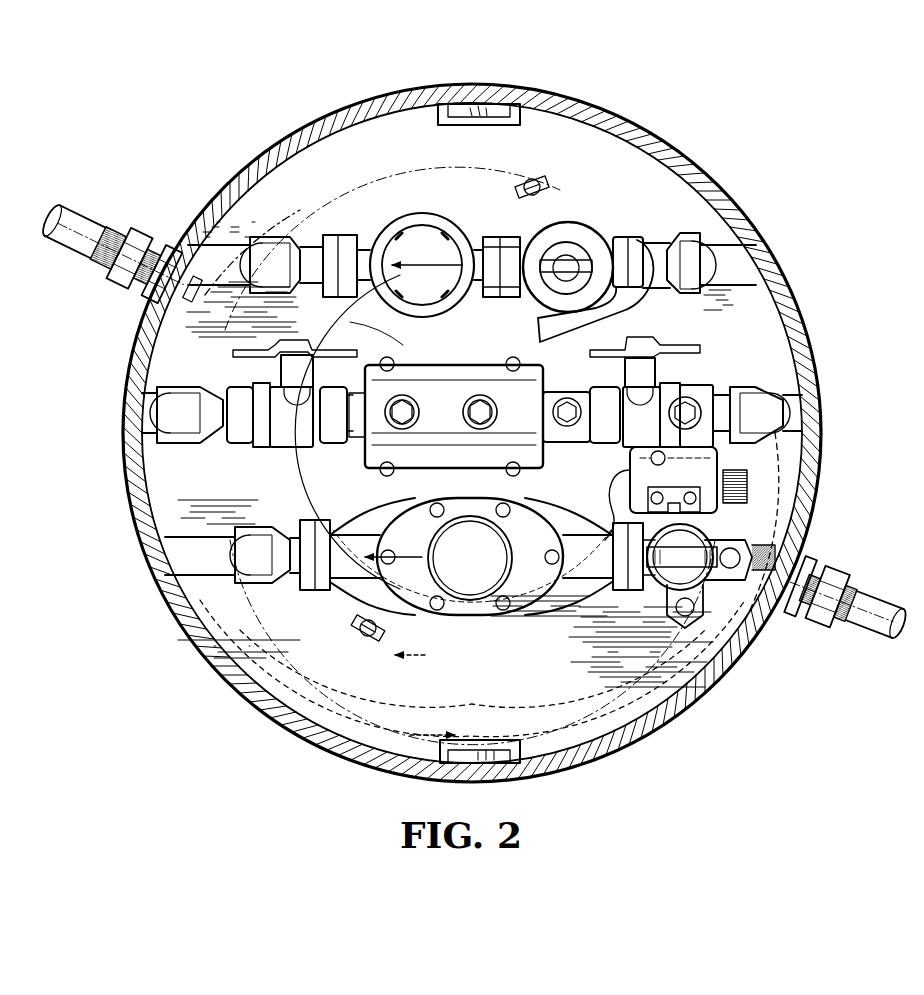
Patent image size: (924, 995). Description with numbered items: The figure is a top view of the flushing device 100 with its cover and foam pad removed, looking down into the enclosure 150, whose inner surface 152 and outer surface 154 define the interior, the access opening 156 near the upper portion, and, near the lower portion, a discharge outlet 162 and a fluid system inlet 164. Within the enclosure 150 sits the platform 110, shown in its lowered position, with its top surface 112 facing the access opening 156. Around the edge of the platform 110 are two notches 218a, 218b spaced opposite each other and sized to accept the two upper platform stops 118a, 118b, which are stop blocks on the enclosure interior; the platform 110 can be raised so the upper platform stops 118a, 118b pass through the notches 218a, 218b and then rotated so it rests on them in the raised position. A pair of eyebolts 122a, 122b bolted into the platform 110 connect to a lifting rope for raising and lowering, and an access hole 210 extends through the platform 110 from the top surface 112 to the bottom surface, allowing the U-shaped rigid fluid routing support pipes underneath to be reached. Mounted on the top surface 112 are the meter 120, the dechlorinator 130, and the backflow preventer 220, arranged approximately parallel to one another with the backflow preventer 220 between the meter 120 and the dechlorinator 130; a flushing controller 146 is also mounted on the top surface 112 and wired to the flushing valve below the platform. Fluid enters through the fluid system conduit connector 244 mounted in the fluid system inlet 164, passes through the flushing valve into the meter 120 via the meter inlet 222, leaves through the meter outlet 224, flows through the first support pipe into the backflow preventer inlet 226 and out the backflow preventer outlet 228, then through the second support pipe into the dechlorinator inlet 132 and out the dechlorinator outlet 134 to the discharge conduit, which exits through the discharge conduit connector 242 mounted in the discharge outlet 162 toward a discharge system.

The flushing device 100 is at (733, 113).
The platform 110 is at (597, 683).
The top surface 112 is at (641, 202).
The upper platform stop 118a is at (483, 126).
The upper platform stop 118b is at (465, 763).
The meter 120 is at (520, 577).
The eyebolt 122a is at (362, 636).
The eyebolt 122b is at (535, 180).
The dechlorinator 130 is at (453, 227).
The dechlorinator inlet 132 is at (622, 237).
The dechlorinator outlet 134 is at (263, 163).
The flushing controller 146 is at (683, 470).
The enclosure 150 is at (773, 253).
The inner surface 152 is at (340, 730).
The outer surface 154 is at (820, 338).
The access opening 156 is at (353, 237).
The discharge outlet 162 is at (173, 247).
The fluid system inlet 164 is at (803, 560).
The access hole 210 is at (400, 344).
The notch 218a is at (430, 118).
The notch 218b is at (477, 743).
The backflow preventer 220 is at (360, 562).
The meter inlet 222 is at (617, 592).
The meter outlet 224 is at (417, 460).
The backflow preventer inlet 226 is at (675, 377).
The backflow preventer outlet 228 is at (263, 447).
The discharge conduit connector 242 is at (153, 270).
The fluid system conduit connector 244 is at (813, 585).